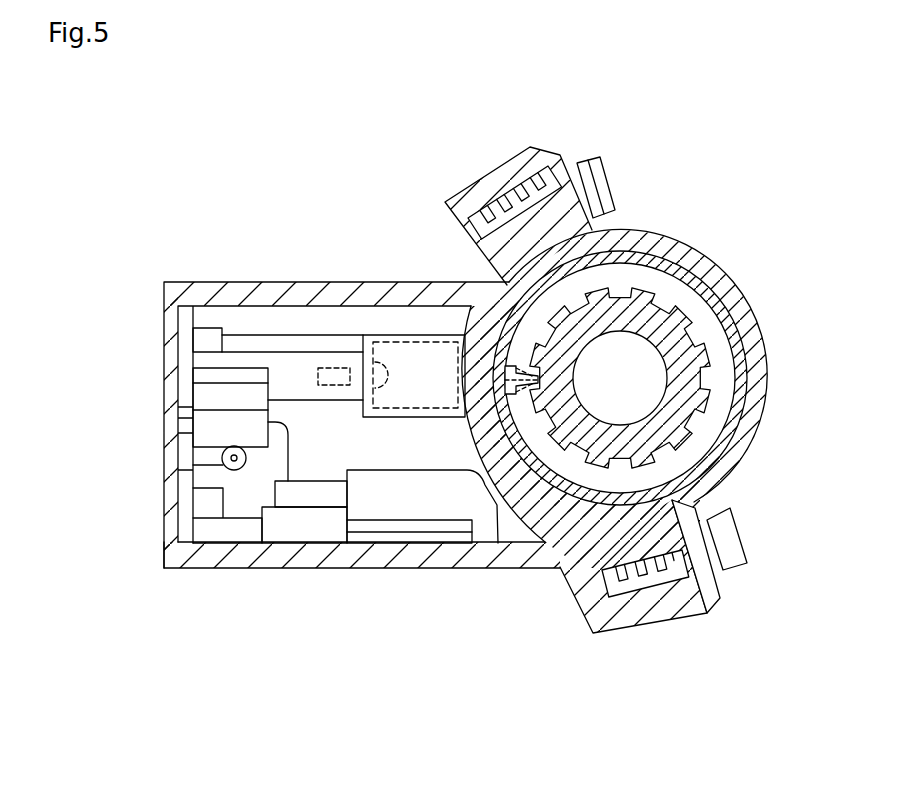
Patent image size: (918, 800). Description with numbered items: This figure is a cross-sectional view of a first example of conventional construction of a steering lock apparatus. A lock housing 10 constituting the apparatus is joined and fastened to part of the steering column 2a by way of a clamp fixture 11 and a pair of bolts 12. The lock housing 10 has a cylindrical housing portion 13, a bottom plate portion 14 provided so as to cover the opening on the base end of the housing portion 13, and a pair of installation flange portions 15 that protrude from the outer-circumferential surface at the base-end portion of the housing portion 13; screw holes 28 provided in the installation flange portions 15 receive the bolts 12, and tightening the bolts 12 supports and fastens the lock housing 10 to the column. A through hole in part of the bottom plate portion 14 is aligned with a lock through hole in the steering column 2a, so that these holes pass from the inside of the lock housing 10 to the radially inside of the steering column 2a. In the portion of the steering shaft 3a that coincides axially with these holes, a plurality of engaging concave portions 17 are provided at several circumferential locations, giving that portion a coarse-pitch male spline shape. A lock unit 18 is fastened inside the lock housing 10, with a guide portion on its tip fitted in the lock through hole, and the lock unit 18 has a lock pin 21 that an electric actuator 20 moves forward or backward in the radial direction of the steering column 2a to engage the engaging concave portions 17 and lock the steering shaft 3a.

The steering column 2a is at (718, 450).
The steering shaft 3a is at (688, 286).
The lock housing 10 is at (214, 282).
The clamp fixture 11 is at (757, 376).
The bolts 12 is at (603, 183).
The cylindrical housing portion 13 is at (224, 560).
The bottom plate portion 14 is at (484, 345).
The installation flange portions 15 is at (495, 186).
The engaging concave portions 17 is at (452, 268).
The lock unit 18 is at (277, 344).
The electric actuator 20 is at (252, 474).
The lock pin 21 is at (472, 548).
The screw holes 28 is at (510, 206).